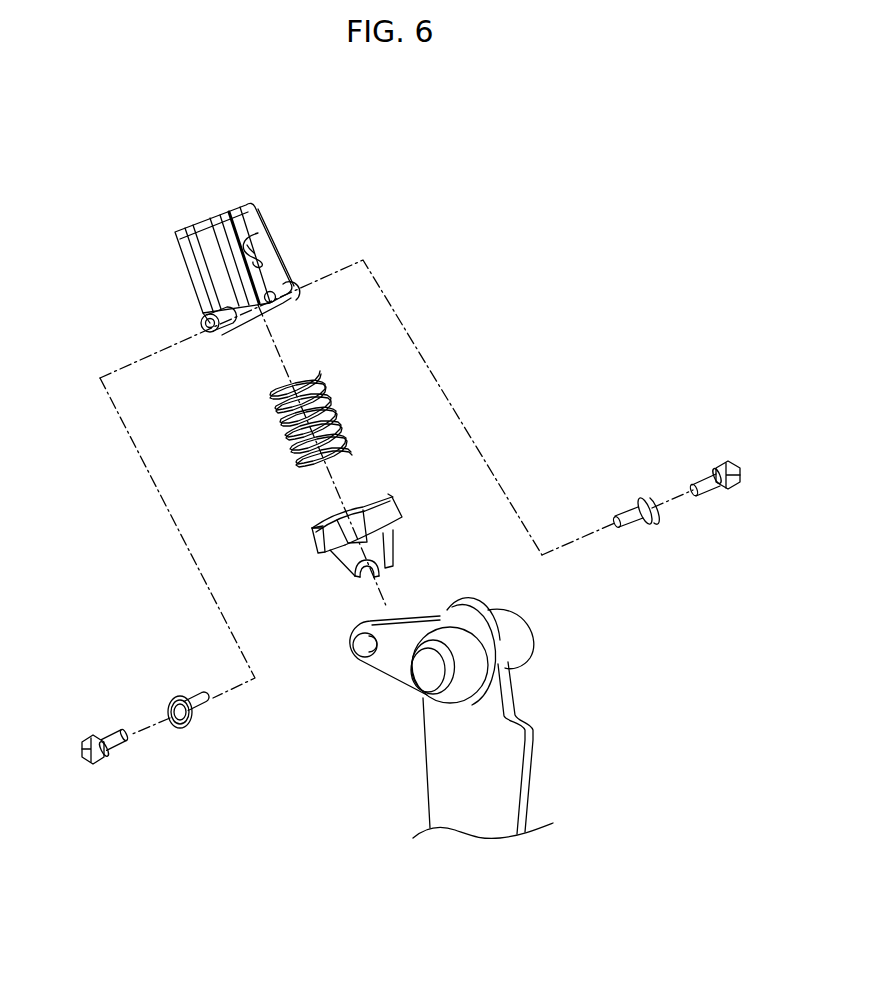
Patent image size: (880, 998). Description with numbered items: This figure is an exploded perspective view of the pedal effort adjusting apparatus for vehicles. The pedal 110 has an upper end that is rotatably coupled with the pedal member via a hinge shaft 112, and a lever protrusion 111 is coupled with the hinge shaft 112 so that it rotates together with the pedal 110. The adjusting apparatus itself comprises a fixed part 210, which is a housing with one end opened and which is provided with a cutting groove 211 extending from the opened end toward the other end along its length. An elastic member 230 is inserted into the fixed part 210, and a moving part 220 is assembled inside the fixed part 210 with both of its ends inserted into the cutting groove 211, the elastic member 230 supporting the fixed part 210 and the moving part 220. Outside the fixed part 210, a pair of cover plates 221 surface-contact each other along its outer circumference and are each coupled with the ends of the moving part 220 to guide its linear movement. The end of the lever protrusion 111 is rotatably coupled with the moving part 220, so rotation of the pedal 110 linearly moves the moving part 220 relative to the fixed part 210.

The pedal 110 is at (510, 764).
The lever protrusion 111 is at (388, 664).
The hinge shaft 112 is at (517, 643).
The fixed part 210 is at (248, 222).
The cutting groove 211 is at (262, 236).
The moving part 220 is at (329, 550).
The cover plates 221 is at (392, 521).
The elastic member 230 is at (336, 405).